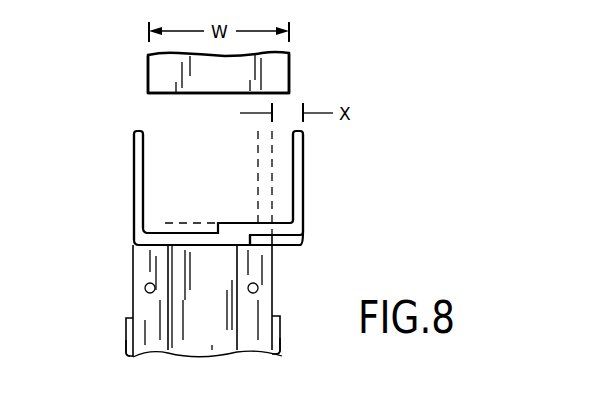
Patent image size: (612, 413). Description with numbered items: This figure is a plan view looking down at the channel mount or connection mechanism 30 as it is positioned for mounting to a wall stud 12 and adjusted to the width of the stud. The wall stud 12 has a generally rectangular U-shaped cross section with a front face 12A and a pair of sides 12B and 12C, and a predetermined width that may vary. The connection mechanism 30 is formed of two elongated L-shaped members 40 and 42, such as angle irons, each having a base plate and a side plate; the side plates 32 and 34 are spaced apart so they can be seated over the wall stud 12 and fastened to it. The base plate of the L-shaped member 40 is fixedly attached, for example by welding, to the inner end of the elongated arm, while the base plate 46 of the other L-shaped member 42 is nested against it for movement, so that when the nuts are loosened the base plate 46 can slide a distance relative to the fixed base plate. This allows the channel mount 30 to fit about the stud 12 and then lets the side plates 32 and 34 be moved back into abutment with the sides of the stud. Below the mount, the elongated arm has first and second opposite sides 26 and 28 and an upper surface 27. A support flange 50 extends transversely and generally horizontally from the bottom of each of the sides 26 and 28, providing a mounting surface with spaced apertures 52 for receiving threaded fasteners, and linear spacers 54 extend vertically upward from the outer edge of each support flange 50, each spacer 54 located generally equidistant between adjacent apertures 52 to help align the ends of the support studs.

The wall stud 12 is at (96, 61).
The front face 12A is at (163, 95).
The side 12B is at (148, 68).
The side 12C is at (290, 74).
The first side 26 is at (168, 260).
The upper surface 27 is at (213, 343).
The second side 28 is at (240, 270).
The channel mount 30 is at (115, 211).
The side plate 32 is at (134, 148).
The side plate 34 is at (303, 148).
The L-shaped member 40 is at (124, 183).
The L-shaped member 42 is at (314, 184).
The base plate 46 is at (288, 233).
The support flange 50 is at (147, 311).
The aperture 52 is at (145, 290).
The spacer 54 is at (125, 340).